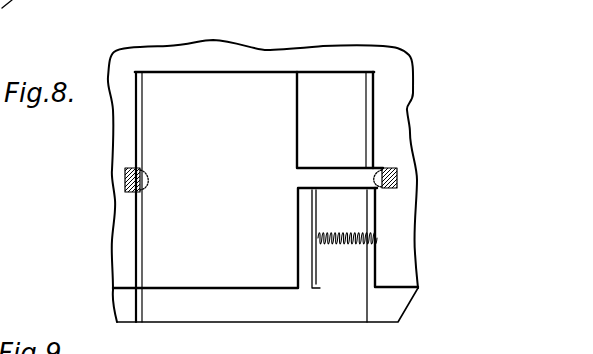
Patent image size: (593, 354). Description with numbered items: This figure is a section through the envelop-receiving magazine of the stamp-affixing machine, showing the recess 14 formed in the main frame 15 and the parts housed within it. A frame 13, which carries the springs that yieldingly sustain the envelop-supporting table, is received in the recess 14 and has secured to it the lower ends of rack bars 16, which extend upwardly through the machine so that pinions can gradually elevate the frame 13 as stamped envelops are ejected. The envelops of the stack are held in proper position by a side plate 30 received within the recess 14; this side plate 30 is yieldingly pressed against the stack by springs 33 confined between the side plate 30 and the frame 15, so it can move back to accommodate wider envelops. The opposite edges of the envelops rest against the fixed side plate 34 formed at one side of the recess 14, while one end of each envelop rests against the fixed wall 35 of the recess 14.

The frame 13 is at (235, 278).
The recess 14 is at (333, 290).
The main frame 15 is at (115, 126).
The rack bars 16 is at (123, 182).
The side plate 30 is at (307, 286).
The springs 33 is at (353, 246).
The fixed side plate 34 is at (137, 228).
The fixed wall 35 is at (211, 70).